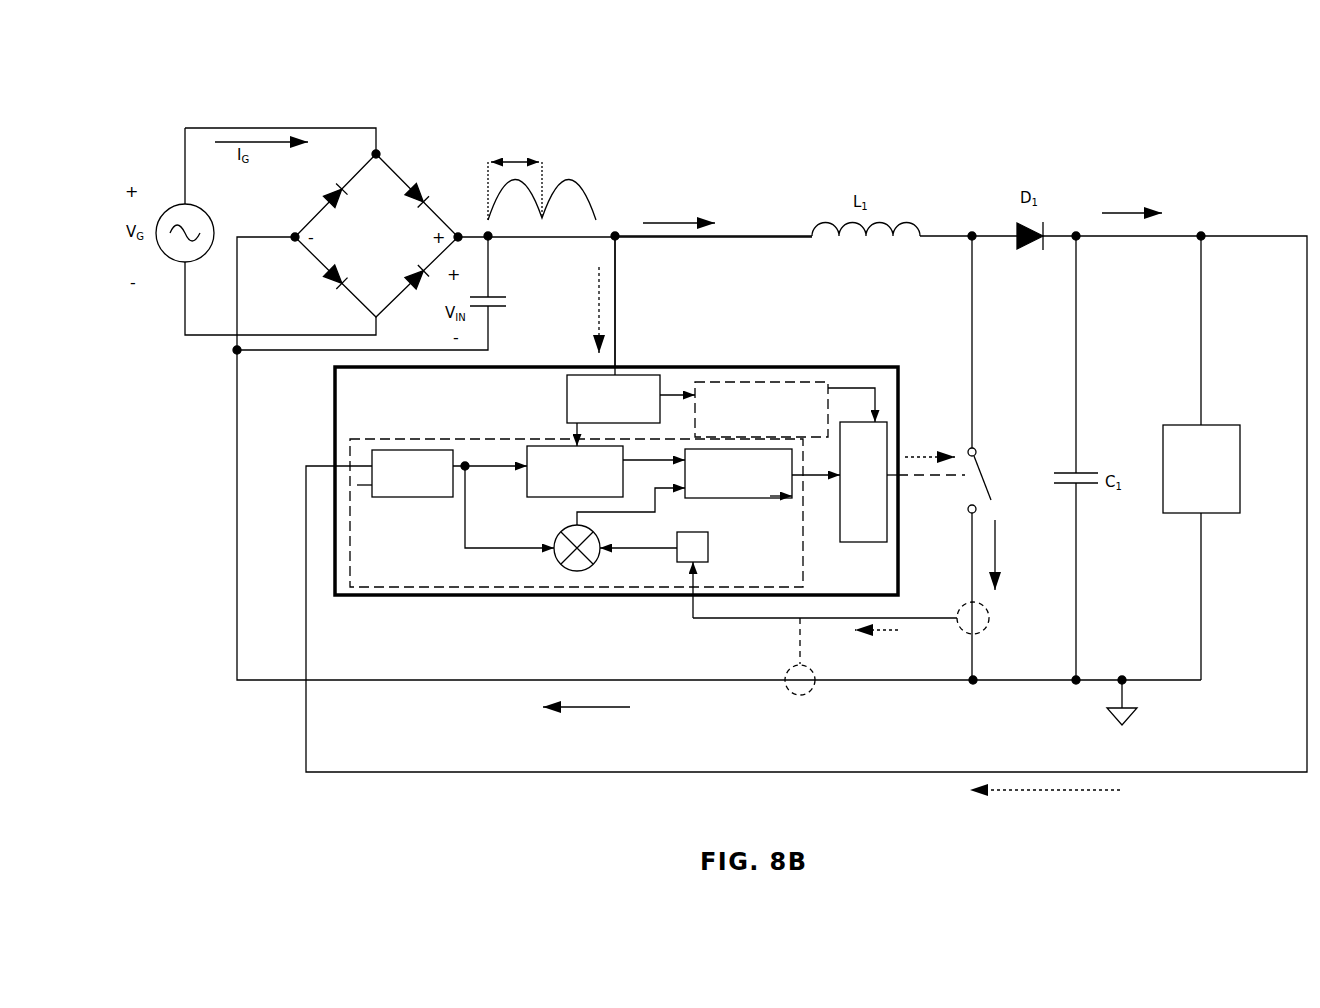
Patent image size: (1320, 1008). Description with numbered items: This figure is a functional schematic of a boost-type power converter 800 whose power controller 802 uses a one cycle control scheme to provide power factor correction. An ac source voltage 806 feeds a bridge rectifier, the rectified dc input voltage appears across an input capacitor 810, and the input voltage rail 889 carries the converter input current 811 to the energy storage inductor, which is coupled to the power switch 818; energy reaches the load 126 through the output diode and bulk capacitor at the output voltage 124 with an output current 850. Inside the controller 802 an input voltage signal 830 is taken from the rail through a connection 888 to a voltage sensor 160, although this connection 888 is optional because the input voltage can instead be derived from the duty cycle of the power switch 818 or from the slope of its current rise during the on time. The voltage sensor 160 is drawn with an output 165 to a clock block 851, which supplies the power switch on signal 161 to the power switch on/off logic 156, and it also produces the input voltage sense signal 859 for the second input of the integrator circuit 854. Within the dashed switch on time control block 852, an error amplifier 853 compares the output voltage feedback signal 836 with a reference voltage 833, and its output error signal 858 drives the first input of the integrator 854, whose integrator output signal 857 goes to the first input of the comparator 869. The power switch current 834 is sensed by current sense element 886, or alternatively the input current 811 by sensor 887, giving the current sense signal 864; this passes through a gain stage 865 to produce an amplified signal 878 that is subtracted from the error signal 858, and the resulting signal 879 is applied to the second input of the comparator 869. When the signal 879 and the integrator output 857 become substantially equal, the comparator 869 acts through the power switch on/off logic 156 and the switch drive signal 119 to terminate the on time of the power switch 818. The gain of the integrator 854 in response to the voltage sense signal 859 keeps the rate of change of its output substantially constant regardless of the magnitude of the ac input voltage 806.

The power converter 800 is at (864, 138).
The ac voltage 806 is at (176, 200).
The input capacitor 810 is at (440, 318).
The reference voltage 833 is at (535, 141).
The input current 811 is at (677, 197).
The output current 850 is at (1145, 196).
The input voltage signal 830 is at (580, 335).
The input voltage rail 889 is at (665, 240).
The connection 888 is at (618, 298).
The power controller 802 is at (778, 366).
The clock 851 is at (732, 366).
The power switch on signal 161 is at (874, 367).
The voltage sensor circuit 160 is at (567, 380).
The Vin sensor output 165 is at (657, 367).
The input voltage sense signal 859 is at (572, 433).
The error amplifier 853 is at (432, 450).
The error signal V_ERR 858 is at (462, 515).
The integrator circuit 854 is at (523, 490).
The integrator output signal 857 is at (633, 461).
The resulting signal 879 is at (662, 507).
The comparator 869 is at (773, 505).
The gain stage 865 is at (710, 555).
The amplified signal 878 is at (648, 550).
The control loop block 852 is at (562, 590).
The power switch on/off logic 156 is at (898, 520).
The switch drive signal 119 is at (918, 433).
The power switch 818 is at (988, 457).
The power switch current 834 is at (1005, 548).
The current sense element 886 is at (968, 632).
The alternative current sensor 887 is at (785, 670).
The current sense signal 864 is at (890, 636).
The feedback signal 836 is at (1020, 800).
The load 126 is at (1160, 418).
The output voltage V_OUT 124 is at (1275, 415).